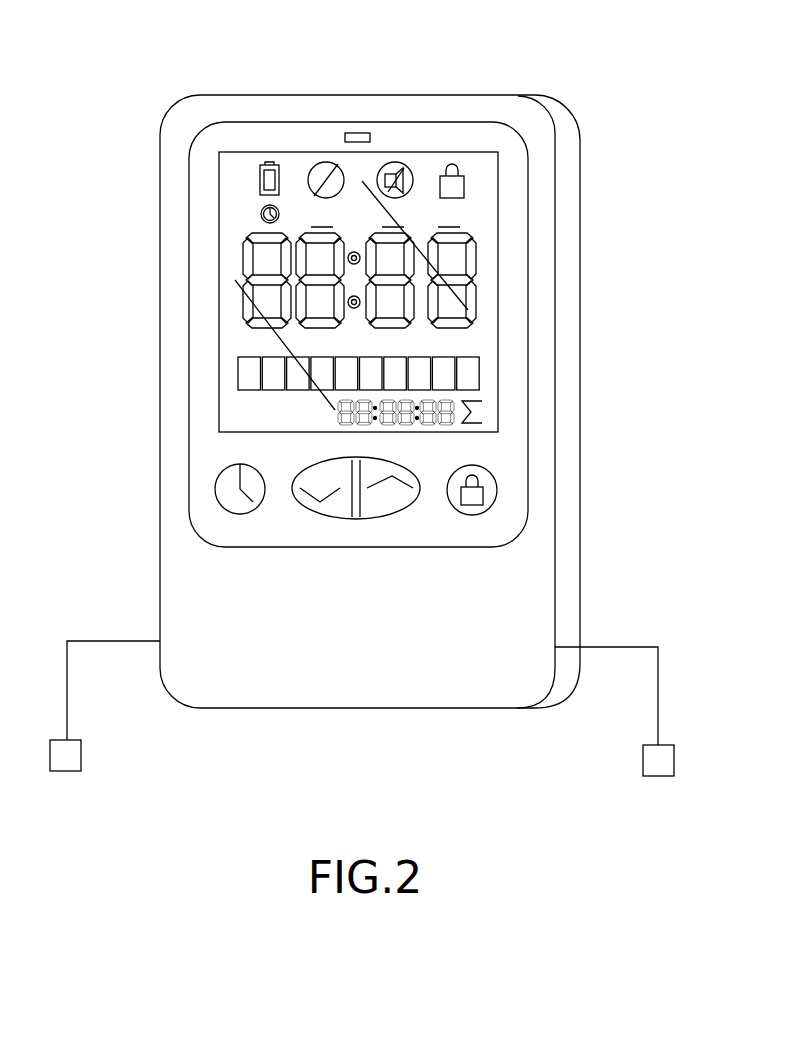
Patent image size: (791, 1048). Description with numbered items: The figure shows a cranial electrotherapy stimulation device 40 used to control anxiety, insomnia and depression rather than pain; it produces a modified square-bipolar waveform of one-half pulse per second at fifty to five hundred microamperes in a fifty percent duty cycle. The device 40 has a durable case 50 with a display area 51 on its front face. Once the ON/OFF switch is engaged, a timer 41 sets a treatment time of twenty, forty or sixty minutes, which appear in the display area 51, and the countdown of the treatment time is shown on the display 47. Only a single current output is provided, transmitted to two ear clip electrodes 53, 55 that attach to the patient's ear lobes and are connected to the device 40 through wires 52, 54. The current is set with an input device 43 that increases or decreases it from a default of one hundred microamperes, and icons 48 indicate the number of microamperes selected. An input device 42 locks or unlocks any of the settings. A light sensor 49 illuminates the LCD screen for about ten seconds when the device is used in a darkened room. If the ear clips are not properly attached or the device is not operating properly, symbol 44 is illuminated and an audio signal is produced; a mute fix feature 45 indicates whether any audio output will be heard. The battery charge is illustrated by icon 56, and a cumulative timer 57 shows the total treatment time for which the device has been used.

The device 40 is at (586, 82).
The timer 41 is at (228, 482).
The input device 42 is at (480, 502).
The input device 43 is at (332, 512).
The symbol 44 is at (313, 163).
The mute fix feature 45 is at (397, 163).
The display 47 is at (250, 264).
The icons 48 is at (468, 376).
The light sensor 49 is at (356, 133).
The durable case 50 is at (566, 605).
The display area 51 is at (493, 247).
The wire 52 is at (110, 642).
The ear clip electrode 53 is at (82, 752).
The wire 54 is at (617, 648).
The ear clip electrode 55 is at (643, 764).
The icon 56 is at (262, 177).
The cumulative timer 57 is at (467, 411).